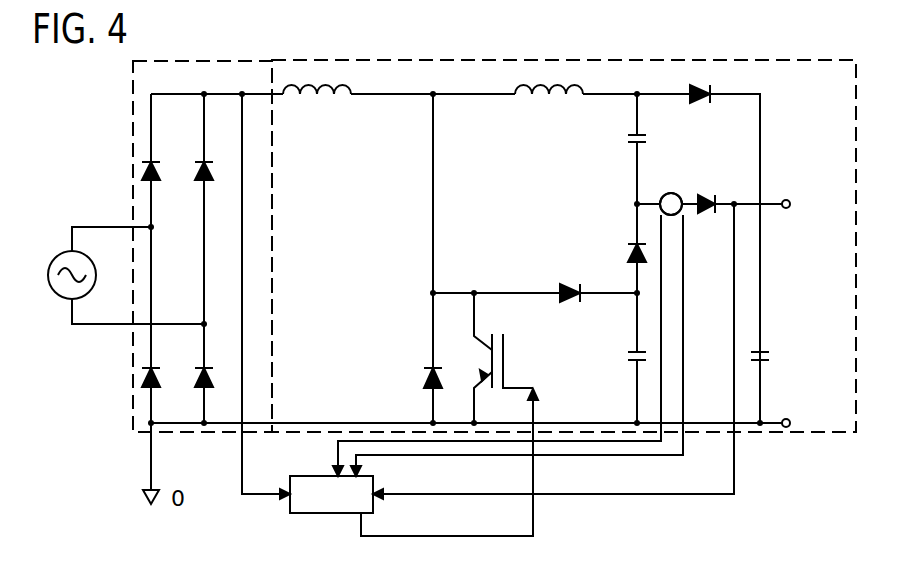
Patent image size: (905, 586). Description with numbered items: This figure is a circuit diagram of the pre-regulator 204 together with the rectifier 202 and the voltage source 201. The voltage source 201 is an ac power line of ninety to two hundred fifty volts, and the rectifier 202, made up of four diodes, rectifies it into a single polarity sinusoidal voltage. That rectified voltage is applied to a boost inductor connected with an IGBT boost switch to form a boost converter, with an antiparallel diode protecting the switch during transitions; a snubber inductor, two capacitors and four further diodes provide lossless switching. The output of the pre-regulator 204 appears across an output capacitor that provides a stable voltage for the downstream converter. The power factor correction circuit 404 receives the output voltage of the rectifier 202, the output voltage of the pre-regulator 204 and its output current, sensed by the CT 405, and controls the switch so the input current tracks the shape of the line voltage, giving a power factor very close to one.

The voltage source 201 is at (58, 294).
The rectifier 202 is at (185, 61).
The pre-regulator 204 is at (549, 262).
The power factor correction circuit 404 is at (313, 513).
The CT 405 is at (673, 192).